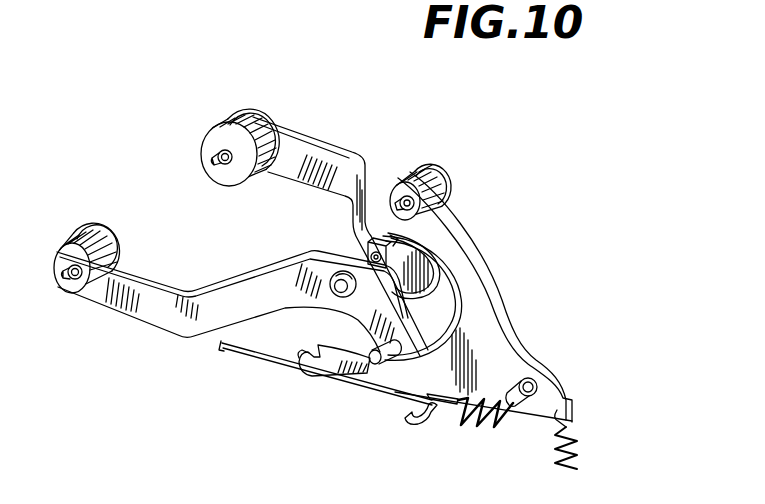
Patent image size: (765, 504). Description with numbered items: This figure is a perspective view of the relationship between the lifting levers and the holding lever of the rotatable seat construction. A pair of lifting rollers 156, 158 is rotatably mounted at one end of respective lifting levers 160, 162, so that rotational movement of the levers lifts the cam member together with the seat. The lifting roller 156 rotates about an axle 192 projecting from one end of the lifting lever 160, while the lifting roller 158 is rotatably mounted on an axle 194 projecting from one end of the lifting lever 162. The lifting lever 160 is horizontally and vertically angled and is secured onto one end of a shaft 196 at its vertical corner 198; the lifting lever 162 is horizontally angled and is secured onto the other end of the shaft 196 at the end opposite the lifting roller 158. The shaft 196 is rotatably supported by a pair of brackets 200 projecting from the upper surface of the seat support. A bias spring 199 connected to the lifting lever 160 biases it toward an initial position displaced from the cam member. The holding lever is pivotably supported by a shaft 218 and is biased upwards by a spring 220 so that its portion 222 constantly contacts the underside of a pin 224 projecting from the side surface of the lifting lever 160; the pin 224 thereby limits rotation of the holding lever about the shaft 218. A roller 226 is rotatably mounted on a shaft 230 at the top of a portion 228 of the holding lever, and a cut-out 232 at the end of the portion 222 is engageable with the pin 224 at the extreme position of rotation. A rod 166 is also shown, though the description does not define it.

The lifting roller 156 is at (97, 235).
The lifting roller 158 is at (243, 120).
The lifting lever 160 is at (238, 268).
The lifting lever 162 is at (333, 143).
The rod 166 is at (256, 358).
The axle 192 is at (72, 280).
The axle 194 is at (219, 160).
The shaft 196 is at (375, 260).
The vertical corner 198 is at (408, 295).
The bias spring 199 is at (472, 412).
The brackets 200 is at (422, 235).
The shaft 218 is at (526, 408).
The spring 220 is at (578, 450).
The portion 222 is at (402, 363).
The pin 224 is at (361, 358).
The roller 226 is at (430, 176).
The portion 228 is at (416, 158).
The shaft 230 is at (415, 206).
The cut-out 232 is at (294, 355).